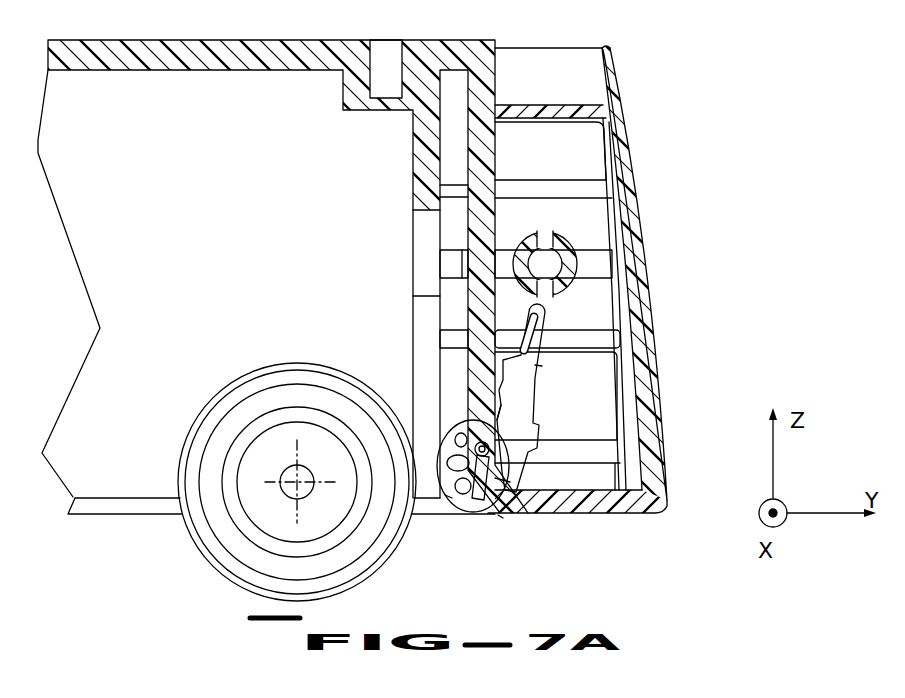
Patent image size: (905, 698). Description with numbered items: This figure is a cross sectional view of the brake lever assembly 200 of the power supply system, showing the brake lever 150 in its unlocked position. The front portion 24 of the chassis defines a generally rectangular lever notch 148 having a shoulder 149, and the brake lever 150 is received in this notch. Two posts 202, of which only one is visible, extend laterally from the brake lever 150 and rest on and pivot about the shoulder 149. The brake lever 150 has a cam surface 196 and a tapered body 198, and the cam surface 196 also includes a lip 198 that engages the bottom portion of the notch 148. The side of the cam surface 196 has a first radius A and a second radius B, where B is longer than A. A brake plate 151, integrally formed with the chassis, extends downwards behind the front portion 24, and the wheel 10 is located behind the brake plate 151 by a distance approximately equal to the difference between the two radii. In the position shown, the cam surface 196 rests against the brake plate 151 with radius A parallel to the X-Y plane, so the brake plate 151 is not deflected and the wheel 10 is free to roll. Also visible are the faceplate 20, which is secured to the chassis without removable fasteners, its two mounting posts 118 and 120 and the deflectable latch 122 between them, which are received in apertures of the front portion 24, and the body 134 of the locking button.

The brake lever assembly 200 is at (654, 42).
The front portion 24 is at (497, 75).
The faceplate 20 is at (625, 106).
The body 134 is at (580, 265).
The mounting post 118 is at (568, 178).
The deflectable latch 122 is at (504, 247).
The mounting post 120 is at (562, 340).
The brake lever 150 is at (515, 395).
The shoulder 149 is at (497, 425).
The tapered body 198 is at (540, 364).
The post 202 is at (510, 482).
The cam surface 196 is at (445, 497).
The lever notch 148 is at (478, 400).
The first radius A is at (480, 445).
The second radius B is at (445, 495).
The brake plate 151 is at (425, 296).
The wheel 10 is at (228, 377).